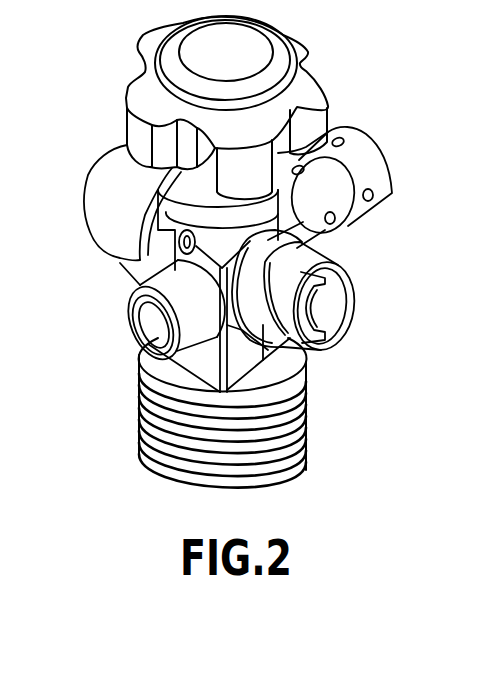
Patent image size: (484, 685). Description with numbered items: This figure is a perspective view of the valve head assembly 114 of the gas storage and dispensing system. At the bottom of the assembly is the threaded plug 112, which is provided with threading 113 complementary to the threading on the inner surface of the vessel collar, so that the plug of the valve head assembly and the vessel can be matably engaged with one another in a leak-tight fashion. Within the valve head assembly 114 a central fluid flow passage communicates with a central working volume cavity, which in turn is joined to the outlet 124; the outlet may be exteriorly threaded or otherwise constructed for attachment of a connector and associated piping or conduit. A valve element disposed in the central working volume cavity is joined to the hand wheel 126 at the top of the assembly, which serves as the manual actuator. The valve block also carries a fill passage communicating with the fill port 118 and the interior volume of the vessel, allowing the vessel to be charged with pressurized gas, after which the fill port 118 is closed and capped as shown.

The threaded plug 112 is at (268, 437).
The threading 113 is at (140, 405).
The valve head assembly 114 is at (250, 355).
The fill port 118 is at (105, 183).
The outlet 124 is at (332, 308).
The hand wheel 126 is at (315, 82).